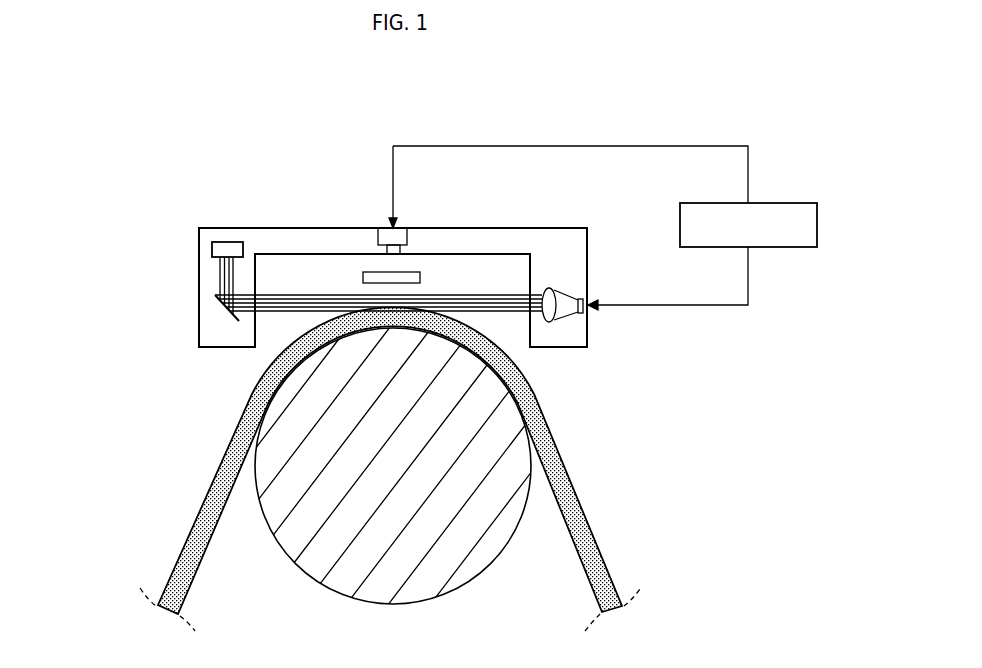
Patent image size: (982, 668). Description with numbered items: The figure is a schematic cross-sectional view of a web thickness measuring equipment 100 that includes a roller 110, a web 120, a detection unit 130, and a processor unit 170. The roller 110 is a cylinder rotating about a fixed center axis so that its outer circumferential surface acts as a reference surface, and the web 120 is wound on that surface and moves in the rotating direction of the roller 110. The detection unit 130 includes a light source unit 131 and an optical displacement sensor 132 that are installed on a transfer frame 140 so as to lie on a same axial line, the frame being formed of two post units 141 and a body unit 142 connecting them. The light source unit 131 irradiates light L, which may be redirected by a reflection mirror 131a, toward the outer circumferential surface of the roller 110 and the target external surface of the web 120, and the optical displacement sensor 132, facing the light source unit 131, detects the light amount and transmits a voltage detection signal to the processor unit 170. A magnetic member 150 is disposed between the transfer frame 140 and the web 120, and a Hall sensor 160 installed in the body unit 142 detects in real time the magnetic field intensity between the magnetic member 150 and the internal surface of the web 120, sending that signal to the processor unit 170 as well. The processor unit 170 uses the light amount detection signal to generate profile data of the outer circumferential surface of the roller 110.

The web thickness measuring equipment 100 is at (123, 85).
The roller 110 is at (470, 563).
The web 120 is at (580, 502).
The detection unit 130 is at (90, 294).
The light source unit 131 is at (168, 303).
The reflection mirror 131a is at (217, 312).
The optical displacement sensor 132 is at (563, 288).
The transfer frame 140 is at (257, 161).
The post unit 141 is at (199, 250).
The body unit 142 is at (222, 228).
The magnetic member 150 is at (421, 278).
The Hall sensor 160 is at (407, 238).
The processor unit 170 is at (817, 226).
The light L is at (290, 312).